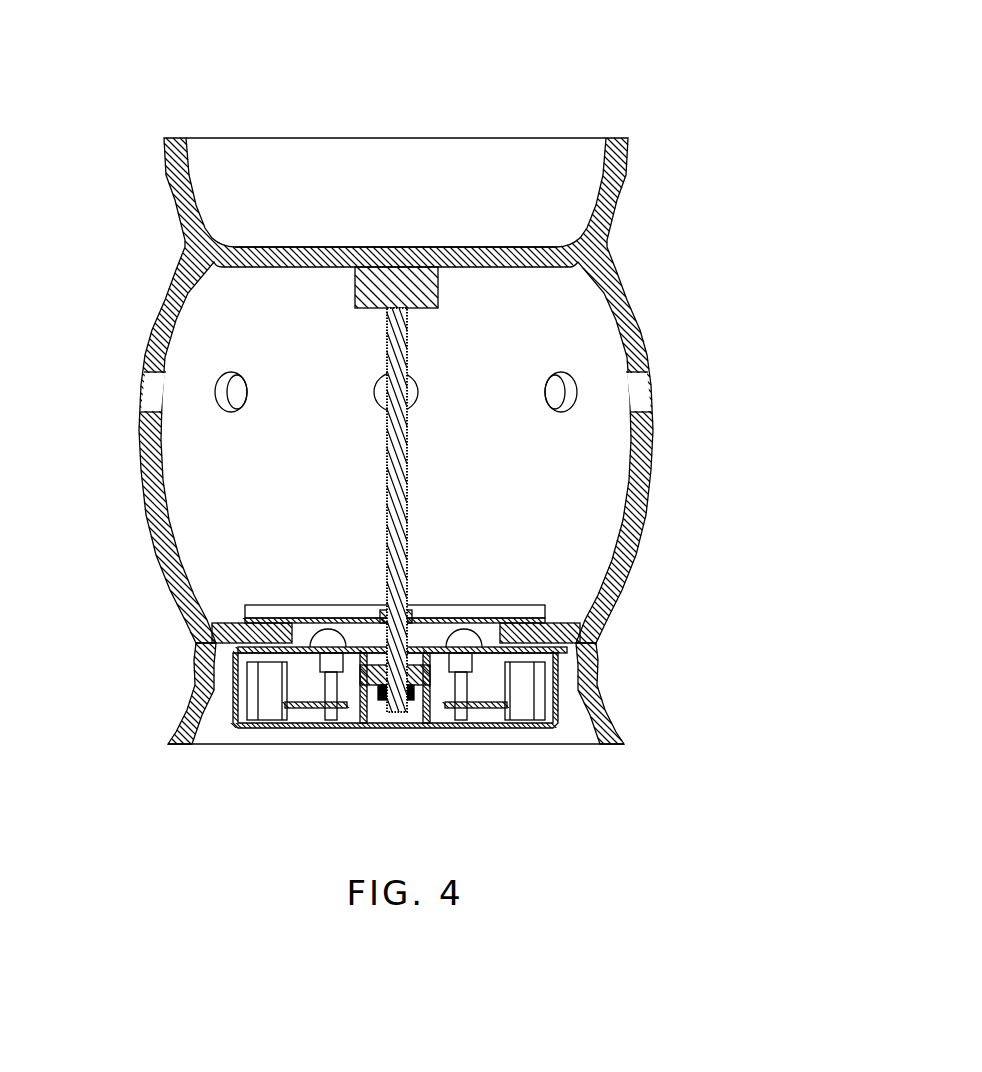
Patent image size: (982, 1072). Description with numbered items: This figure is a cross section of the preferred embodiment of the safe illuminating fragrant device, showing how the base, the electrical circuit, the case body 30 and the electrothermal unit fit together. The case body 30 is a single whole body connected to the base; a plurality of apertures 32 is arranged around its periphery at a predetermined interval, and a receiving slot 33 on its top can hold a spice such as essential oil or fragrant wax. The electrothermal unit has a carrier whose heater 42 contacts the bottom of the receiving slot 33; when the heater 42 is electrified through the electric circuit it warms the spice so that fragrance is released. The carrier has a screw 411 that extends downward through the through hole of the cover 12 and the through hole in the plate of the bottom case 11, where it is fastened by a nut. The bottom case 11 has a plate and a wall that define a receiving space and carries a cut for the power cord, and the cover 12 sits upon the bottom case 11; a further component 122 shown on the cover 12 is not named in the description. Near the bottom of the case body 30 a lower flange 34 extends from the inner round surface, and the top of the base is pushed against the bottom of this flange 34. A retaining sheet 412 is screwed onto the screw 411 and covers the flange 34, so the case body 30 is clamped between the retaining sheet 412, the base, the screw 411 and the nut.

The case body 30 is at (620, 293).
The apertures 32 is at (637, 393).
The receiving slot 33 is at (507, 185).
The lower flange 34 is at (232, 623).
The heater 42 is at (362, 293).
The screw 411 is at (383, 485).
The retaining sheet 412 is at (483, 617).
The light bulbs 122 is at (327, 628).
The cover 12 is at (490, 650).
The bottom case 11 is at (492, 723).